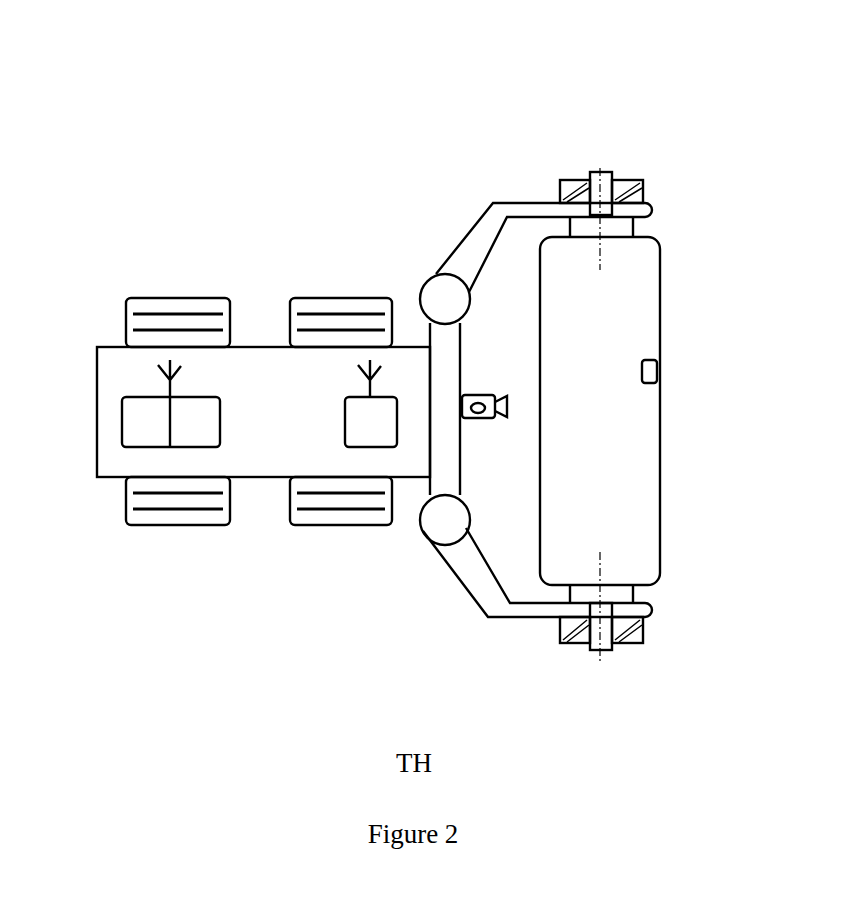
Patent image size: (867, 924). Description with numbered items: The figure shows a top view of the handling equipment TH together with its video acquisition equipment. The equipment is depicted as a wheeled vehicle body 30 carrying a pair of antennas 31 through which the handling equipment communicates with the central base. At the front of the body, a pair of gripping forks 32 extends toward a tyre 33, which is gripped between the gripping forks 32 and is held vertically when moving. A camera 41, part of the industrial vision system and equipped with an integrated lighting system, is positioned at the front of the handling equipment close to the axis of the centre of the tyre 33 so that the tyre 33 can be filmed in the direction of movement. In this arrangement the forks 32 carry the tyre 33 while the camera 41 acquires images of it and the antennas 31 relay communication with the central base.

The autonomous vehicle 30 is at (162, 273).
The antennas 31 is at (363, 390).
The gripping forks 32 is at (490, 204).
The tyre 33 is at (655, 291).
The camera 41 is at (474, 423).